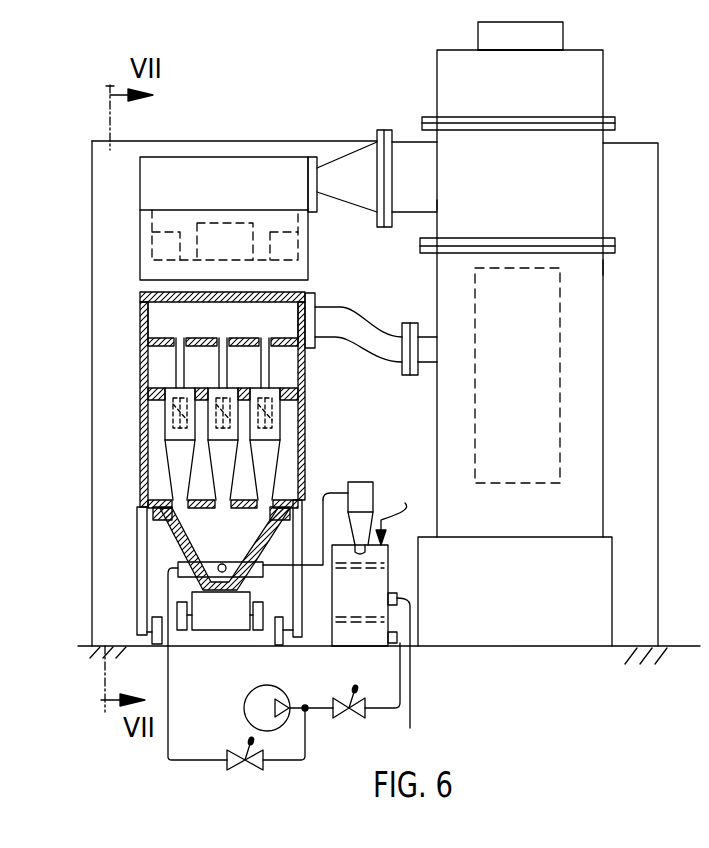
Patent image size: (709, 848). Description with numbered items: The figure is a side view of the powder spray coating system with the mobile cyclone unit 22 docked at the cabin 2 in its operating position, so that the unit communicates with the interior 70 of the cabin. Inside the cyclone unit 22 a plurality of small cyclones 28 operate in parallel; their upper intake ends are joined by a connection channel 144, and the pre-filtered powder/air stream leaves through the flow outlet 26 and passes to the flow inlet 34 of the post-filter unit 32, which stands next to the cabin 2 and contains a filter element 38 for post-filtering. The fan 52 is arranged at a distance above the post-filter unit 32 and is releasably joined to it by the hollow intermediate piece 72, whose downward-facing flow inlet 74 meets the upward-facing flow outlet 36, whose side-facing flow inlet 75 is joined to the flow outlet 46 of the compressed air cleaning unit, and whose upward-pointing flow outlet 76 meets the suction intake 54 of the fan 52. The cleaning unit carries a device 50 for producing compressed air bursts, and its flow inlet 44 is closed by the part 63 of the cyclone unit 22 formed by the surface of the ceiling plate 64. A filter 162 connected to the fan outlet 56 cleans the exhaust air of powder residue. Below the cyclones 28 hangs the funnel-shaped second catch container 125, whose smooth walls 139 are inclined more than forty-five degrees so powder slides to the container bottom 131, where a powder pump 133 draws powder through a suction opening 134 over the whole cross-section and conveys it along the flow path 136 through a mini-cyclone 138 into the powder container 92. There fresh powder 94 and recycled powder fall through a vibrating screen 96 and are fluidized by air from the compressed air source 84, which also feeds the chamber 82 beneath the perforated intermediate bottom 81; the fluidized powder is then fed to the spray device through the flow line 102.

The cabin 2 is at (108, 213).
The cyclone unit 22 is at (138, 336).
The flow outlet 26 is at (298, 325).
The small cyclones 28 is at (262, 470).
The post-filter unit 32 is at (590, 415).
The flow inlet 34 is at (313, 320).
The flow outlet 36 is at (600, 265).
The filter element 38 is at (553, 348).
The flow inlet 44 is at (302, 288).
The flow outlet 46 is at (305, 183).
The device for generation of compressed air bursts 50 is at (228, 235).
The fan 52 is at (590, 85).
The suction intake 54 is at (617, 123).
The flow outlet 56 is at (527, 52).
The part 63 is at (140, 292).
The ceiling plate 64 is at (140, 298).
The interior 70 is at (105, 500).
The intermediate piece 72 is at (590, 195).
The flow inlet 74 is at (592, 240).
The flow inlet 75 is at (320, 170).
The flow outlet 76 is at (552, 135).
The intermediate bottom 81 is at (318, 647).
The chamber 82 is at (339, 646).
The compressed air source 84 is at (245, 705).
The powder container 92 is at (366, 646).
The fresh powder 94 is at (398, 510).
The vibrating screen 96 is at (388, 568).
The flow line 102 is at (412, 710).
The second catch container 125 is at (182, 537).
The container bottom 131 is at (213, 632).
The powder pump 133 is at (283, 562).
The suction opening 134 is at (222, 562).
The flow path 136 is at (342, 490).
The mini-cyclone 138 is at (362, 482).
The walls 139 is at (182, 552).
The connection channel 144 is at (297, 373).
The filter 162 is at (565, 35).